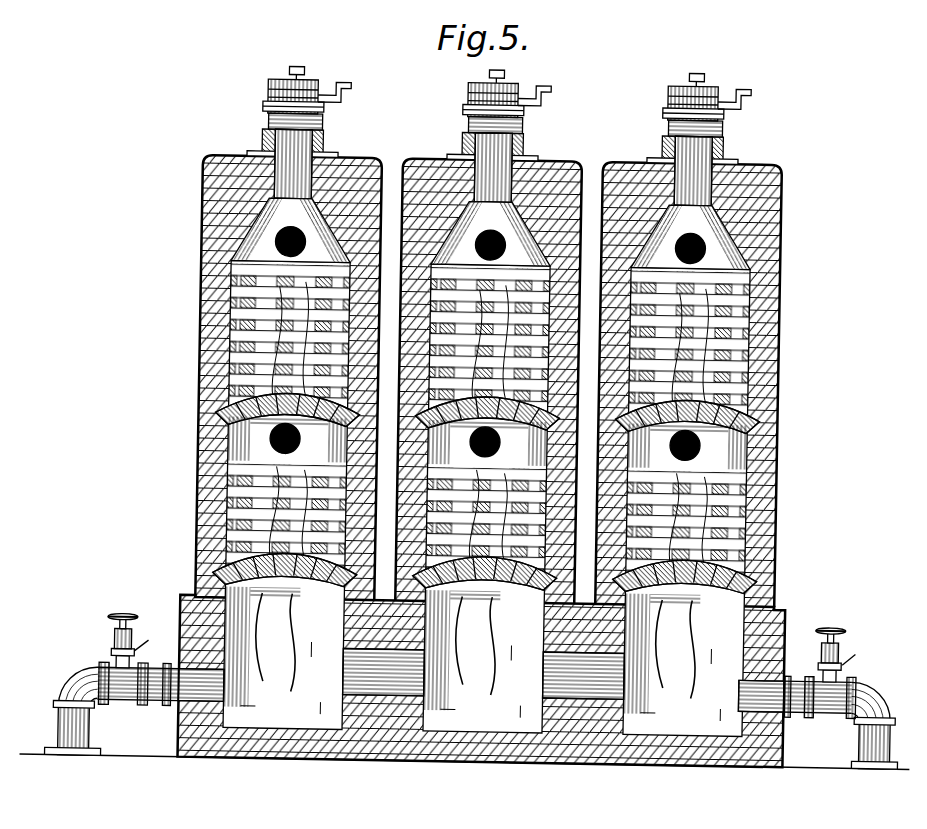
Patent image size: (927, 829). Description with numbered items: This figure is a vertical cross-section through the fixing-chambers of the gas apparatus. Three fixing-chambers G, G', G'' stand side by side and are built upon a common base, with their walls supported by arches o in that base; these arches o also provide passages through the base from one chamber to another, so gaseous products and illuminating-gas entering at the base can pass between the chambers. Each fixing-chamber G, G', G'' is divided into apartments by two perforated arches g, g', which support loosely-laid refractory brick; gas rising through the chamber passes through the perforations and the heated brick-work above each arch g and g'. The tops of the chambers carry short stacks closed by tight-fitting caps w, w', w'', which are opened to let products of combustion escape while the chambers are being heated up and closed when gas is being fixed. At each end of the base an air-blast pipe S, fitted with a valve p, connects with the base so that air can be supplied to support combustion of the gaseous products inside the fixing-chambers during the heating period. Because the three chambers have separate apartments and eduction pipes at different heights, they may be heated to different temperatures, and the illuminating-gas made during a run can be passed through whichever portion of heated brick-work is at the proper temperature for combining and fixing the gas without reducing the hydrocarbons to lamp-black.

The tight-fitting cap w is at (295, 90).
The tight-fitting cap w' is at (495, 93).
The tight-fitting cap w'' is at (692, 97).
The fixing-chamber G is at (275, 421).
The fixing-chamber G' is at (475, 424).
The fixing-chamber G'' is at (696, 428).
The perforated arch g' is at (486, 486).
The perforated arch g is at (483, 636).
The arch o is at (190, 618).
The valve p is at (481, 647).
The air-blast pipe S is at (477, 715).